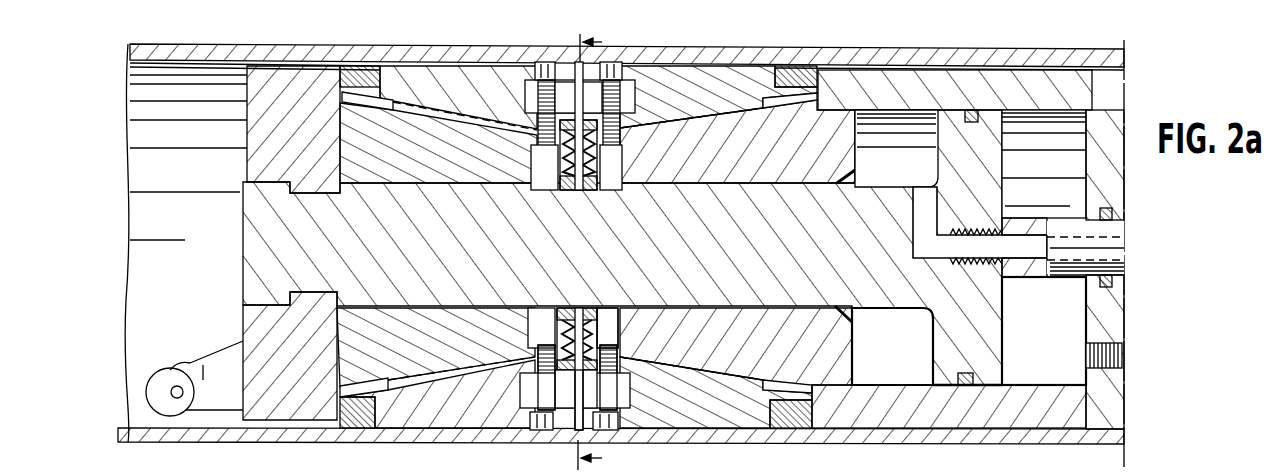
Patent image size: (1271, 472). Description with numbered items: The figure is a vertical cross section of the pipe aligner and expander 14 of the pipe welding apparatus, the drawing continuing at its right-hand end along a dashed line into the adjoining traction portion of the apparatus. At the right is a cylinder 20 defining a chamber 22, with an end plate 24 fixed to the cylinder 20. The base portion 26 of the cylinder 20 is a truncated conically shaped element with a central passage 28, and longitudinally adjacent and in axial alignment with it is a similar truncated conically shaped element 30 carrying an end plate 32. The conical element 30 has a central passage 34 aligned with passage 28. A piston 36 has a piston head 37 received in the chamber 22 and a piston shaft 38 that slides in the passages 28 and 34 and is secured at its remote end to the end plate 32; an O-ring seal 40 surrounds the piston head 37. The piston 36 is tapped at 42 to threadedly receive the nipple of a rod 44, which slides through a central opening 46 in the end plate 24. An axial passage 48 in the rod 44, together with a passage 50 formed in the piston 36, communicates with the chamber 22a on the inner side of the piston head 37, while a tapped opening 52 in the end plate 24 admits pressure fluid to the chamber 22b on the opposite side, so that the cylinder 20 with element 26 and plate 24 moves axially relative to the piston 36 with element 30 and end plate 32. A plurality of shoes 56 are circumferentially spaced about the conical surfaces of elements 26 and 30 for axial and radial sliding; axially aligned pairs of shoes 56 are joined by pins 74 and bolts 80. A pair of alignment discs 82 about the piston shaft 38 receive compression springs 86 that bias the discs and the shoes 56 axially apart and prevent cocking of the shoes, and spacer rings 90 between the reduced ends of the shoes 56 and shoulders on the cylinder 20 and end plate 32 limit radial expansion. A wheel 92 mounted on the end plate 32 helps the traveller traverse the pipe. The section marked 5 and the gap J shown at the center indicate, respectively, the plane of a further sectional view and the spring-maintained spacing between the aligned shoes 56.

The pipe aligner and expander 14 is at (1162, 350).
The cylinder 20 is at (1032, 98).
The chamber 22 is at (1049, 307).
The chamber on inner side of piston head 22a is at (892, 174).
The chamber on opposite side of piston head 22b is at (1061, 334).
The end plate 24 is at (1112, 316).
The base portion 26 is at (748, 376).
The central passage 28 is at (710, 306).
The truncated conically shaped element 30 is at (425, 159).
The end plate 32 is at (248, 147).
The central passage 34 is at (346, 306).
The piston 36 is at (1002, 330).
The piston head 37 is at (976, 349).
The piston shaft 38 is at (582, 255).
The O-ring seal 40 is at (957, 380).
The tapped portion 42 is at (990, 229).
The rod 44 is at (1124, 244).
The central opening 46 is at (1100, 216).
The axial passage 48 is at (1128, 262).
The passage 50 is at (918, 210).
The tapped opening 52 is at (1120, 357).
The shoes 56 is at (426, 428).
The pins 74 is at (548, 429).
The bolts 80 is at (618, 430).
The alignment discs 82 is at (607, 328).
The compression springs 86 is at (597, 340).
The spacer rings 90 is at (346, 420).
The wheel 92 is at (165, 362).
The section line 5- 5 is at (600, 250).
The gap J is at (568, 437).